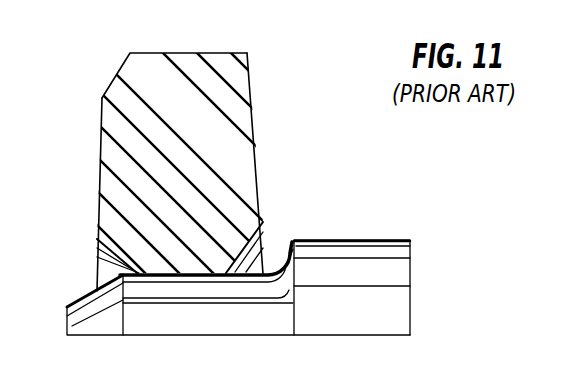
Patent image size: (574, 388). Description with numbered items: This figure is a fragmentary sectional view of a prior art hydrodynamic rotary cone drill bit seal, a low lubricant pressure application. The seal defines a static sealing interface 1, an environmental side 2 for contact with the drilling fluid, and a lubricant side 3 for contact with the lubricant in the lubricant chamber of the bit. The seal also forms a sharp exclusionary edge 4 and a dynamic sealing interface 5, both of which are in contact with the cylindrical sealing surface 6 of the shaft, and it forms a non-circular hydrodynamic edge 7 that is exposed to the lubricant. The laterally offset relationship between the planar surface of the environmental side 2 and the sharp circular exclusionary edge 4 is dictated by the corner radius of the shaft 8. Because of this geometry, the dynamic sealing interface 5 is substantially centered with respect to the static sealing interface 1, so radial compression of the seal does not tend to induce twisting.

The static sealing interface 1 is at (185, 53).
The environmental side 2 is at (255, 143).
The lubricant side 3 is at (100, 148).
The sharp exclusionary edge 4 is at (265, 233).
The dynamic sealing interface 5 is at (202, 281).
The cylindrical sealing surface 6 is at (110, 271).
The non-circular hydrodynamic edge 7 is at (145, 280).
The shaft 8 is at (288, 242).